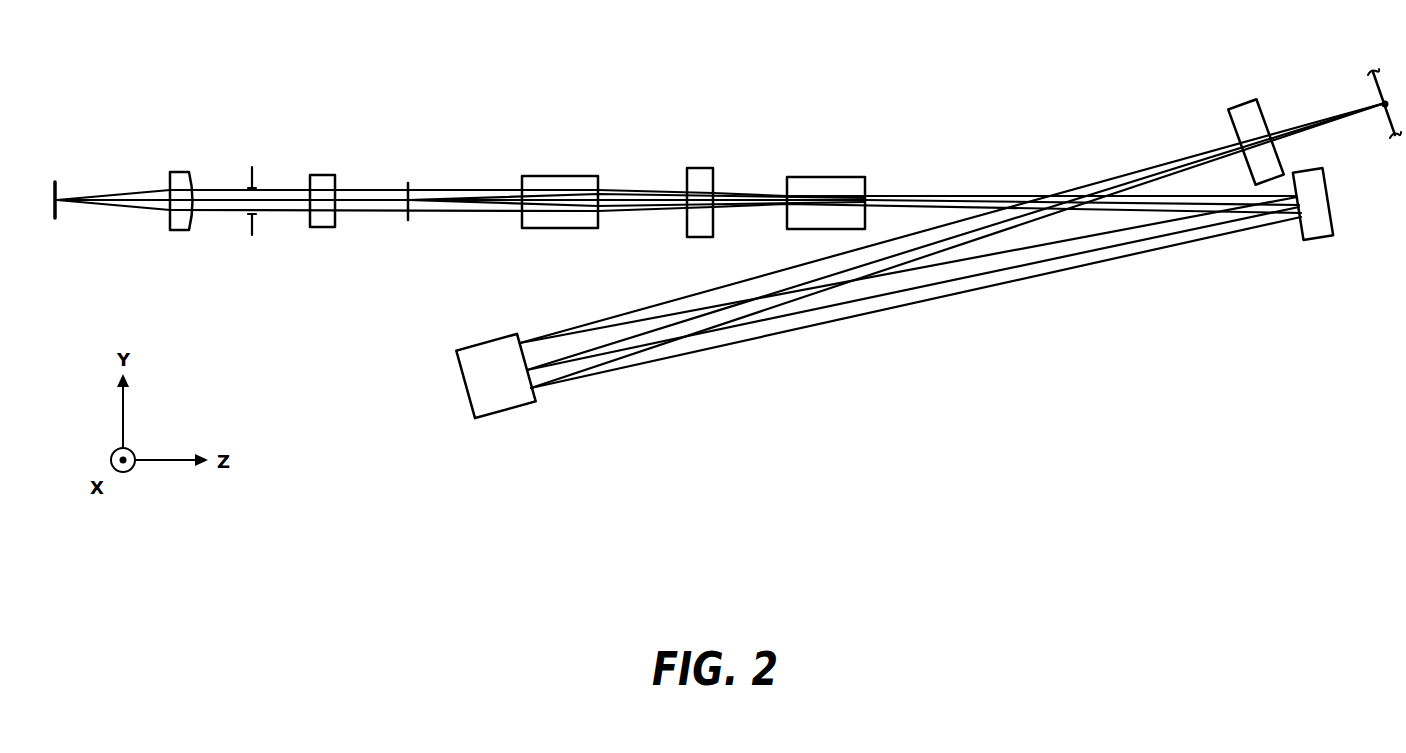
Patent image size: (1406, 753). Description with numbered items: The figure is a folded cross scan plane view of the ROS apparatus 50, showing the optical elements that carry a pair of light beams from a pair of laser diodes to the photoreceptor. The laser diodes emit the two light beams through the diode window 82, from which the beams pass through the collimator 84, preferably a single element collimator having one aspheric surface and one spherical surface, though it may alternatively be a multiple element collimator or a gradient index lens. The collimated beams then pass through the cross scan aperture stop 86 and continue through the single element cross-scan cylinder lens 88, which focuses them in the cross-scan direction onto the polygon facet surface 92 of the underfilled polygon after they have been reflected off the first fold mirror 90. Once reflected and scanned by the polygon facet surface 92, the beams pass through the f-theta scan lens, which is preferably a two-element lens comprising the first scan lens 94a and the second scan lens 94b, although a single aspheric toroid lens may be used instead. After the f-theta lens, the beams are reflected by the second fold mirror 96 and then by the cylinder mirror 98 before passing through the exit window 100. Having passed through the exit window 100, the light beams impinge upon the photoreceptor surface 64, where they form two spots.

The ROS apparatus 50 is at (516, 46).
The diode window 82 is at (57, 156).
The collimator 84 is at (180, 172).
The cross scan aperture stop 86 is at (251, 242).
The cross-scan cylinder lens 88 is at (322, 175).
The polygon facet surface 92 is at (409, 233).
The first scan lens 94a is at (540, 176).
The first fold mirror 90 is at (700, 168).
The second scan lens 94b is at (807, 177).
The second fold mirror 96 is at (1318, 240).
The cylinder mirror 98 is at (505, 415).
The exit window 100 is at (1247, 104).
The photoreceptor surface 64 is at (1385, 117).